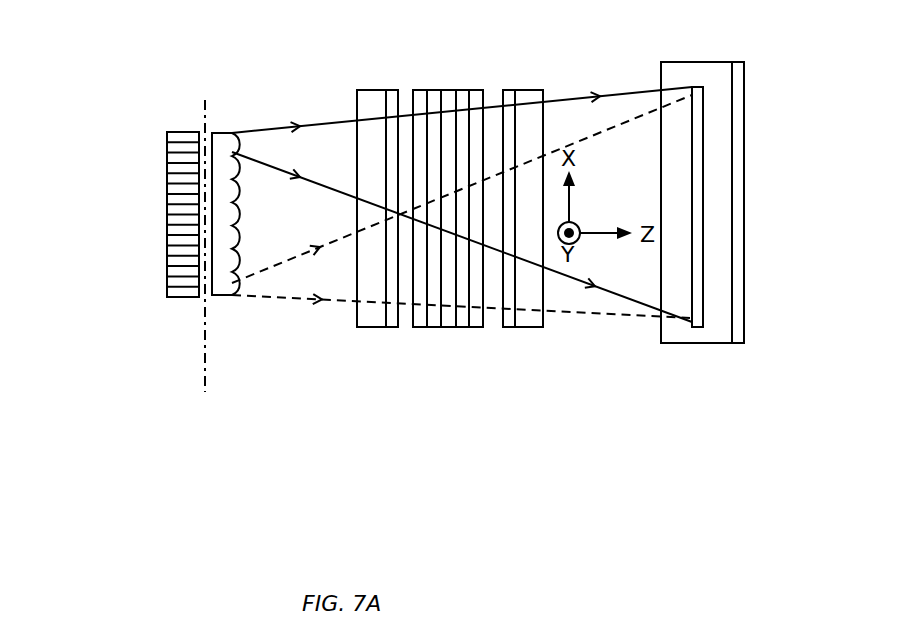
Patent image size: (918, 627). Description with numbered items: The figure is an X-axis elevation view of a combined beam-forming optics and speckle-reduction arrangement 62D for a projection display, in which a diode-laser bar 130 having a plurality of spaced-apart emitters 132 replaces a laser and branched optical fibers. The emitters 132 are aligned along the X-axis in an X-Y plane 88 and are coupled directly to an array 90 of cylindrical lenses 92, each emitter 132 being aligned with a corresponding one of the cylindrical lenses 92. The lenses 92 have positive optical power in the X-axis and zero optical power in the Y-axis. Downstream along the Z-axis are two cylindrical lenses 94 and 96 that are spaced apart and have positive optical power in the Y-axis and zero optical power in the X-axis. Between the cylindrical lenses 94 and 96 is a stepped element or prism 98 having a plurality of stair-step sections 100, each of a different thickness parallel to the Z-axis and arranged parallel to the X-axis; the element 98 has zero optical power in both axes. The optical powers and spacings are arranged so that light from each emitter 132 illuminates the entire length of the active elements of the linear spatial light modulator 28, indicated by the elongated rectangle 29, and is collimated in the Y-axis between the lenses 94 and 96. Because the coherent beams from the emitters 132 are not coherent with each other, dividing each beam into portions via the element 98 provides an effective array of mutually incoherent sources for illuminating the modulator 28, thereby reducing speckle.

The combined beam-forming optics and speckle-reduction arrangement 62D is at (462, 331).
The diode-laser bar 130 is at (119, 214).
The emitters 132 is at (192, 140).
The X-Y plane 88 is at (203, 370).
The array of cylindrical lenses 90 is at (251, 266).
The cylindrical lenses 92 is at (237, 247).
The cylindrical lens 94 is at (393, 260).
The stepped element or prism 98 is at (456, 271).
The stair-step sections 100 is at (418, 95).
The cylindrical lens 96 is at (544, 260).
The one-dimensional spatial light modulator 28 is at (698, 258).
The elongated rectangle 29 is at (697, 138).